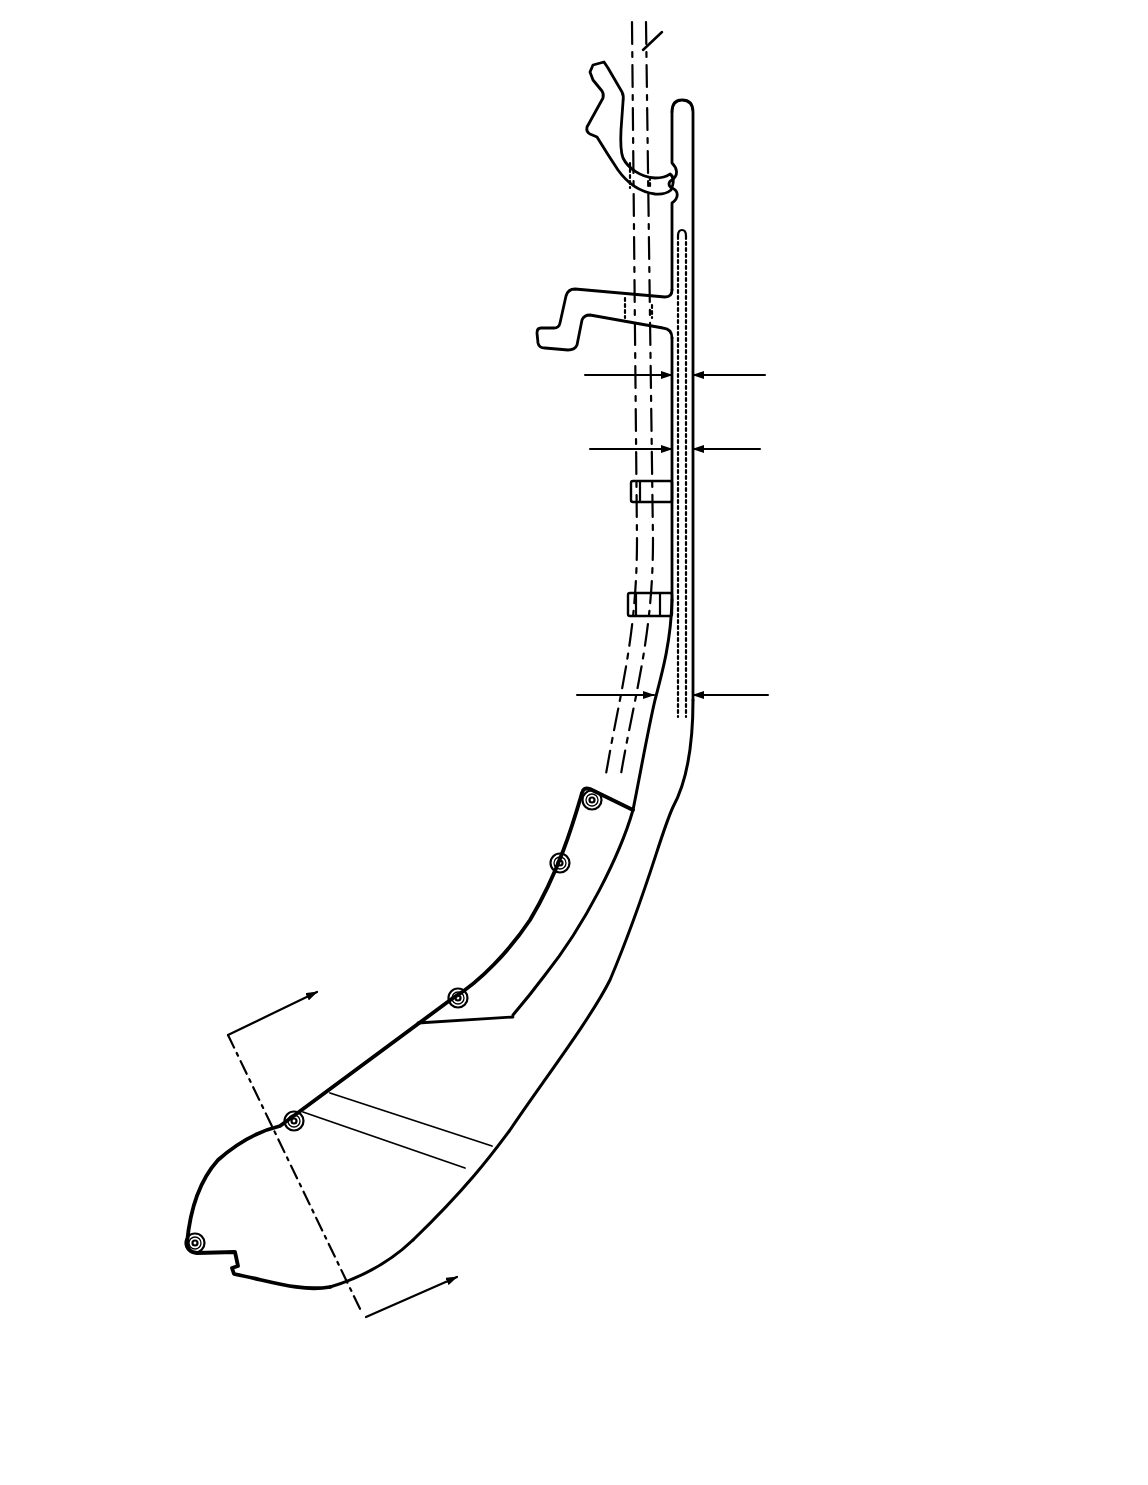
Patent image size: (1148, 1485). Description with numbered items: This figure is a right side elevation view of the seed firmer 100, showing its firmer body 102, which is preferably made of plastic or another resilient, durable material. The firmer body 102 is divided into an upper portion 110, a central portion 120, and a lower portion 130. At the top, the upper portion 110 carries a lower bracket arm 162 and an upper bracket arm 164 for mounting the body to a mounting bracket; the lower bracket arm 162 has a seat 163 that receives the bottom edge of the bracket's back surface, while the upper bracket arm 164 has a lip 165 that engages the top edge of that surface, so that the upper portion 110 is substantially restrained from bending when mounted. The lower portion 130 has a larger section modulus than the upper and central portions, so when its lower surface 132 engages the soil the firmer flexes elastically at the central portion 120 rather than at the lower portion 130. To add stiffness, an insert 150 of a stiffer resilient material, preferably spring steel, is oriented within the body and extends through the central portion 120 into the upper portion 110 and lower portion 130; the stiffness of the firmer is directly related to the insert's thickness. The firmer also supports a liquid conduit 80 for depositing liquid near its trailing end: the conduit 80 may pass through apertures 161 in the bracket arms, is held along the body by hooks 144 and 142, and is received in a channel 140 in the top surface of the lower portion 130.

The seed firmer 100 is at (131, 235).
The liquid conduit 80 is at (668, 25).
The firmer body 102 is at (663, 732).
The upper portion 110 is at (682, 153).
The central portion 120 is at (759, 400).
The lower portion 130 is at (667, 793).
The lower surface 132 is at (460, 1188).
The channel 140 is at (390, 1043).
The hook 142 is at (632, 617).
The hook 144 is at (637, 500).
The insert 150 is at (687, 425).
The aperture 161 is at (620, 183).
The lower bracket arm 162 is at (557, 350).
The seat 163 is at (528, 336).
The upper bracket arm 164 is at (551, 128).
The lip 165 is at (585, 148).